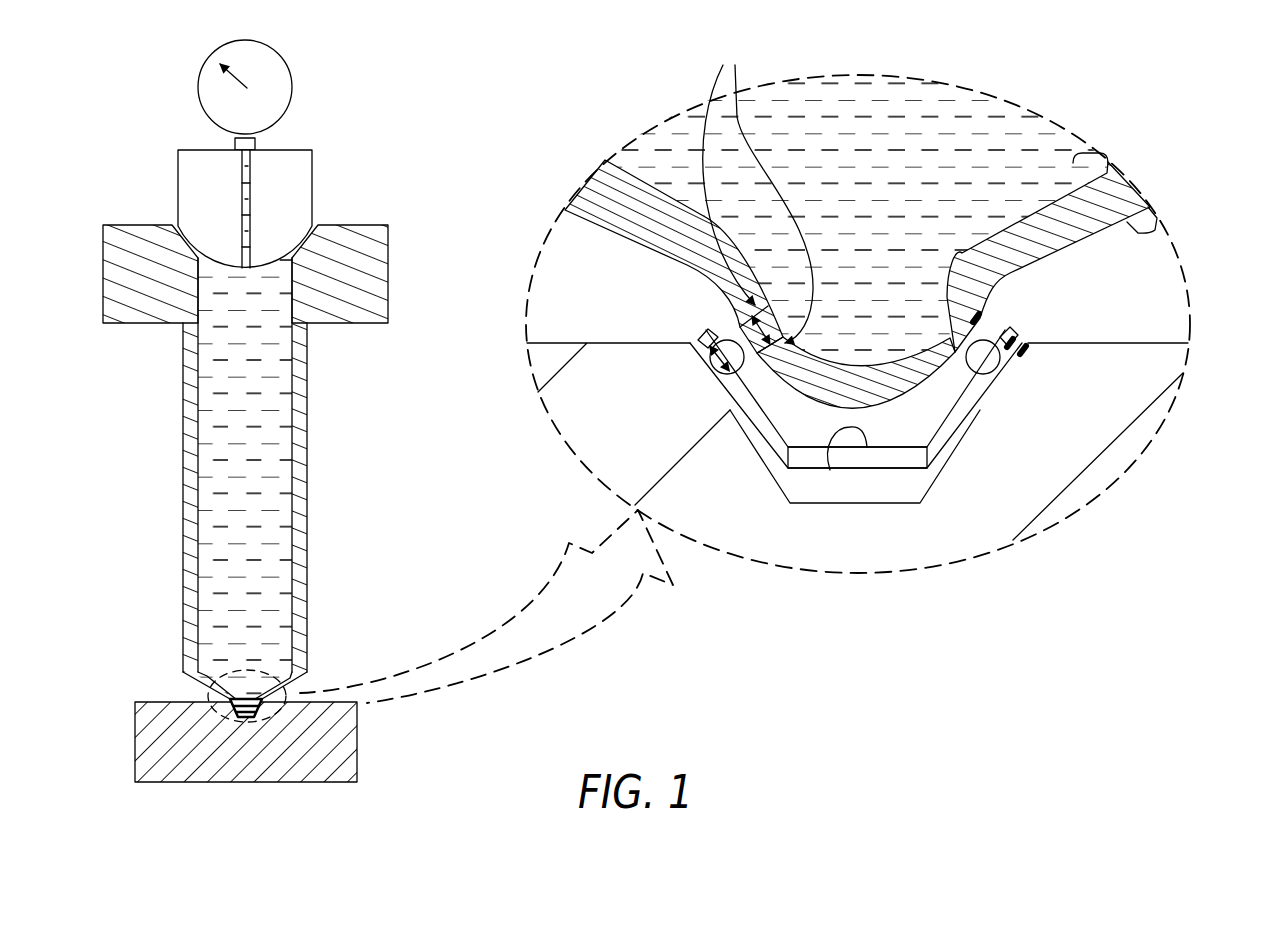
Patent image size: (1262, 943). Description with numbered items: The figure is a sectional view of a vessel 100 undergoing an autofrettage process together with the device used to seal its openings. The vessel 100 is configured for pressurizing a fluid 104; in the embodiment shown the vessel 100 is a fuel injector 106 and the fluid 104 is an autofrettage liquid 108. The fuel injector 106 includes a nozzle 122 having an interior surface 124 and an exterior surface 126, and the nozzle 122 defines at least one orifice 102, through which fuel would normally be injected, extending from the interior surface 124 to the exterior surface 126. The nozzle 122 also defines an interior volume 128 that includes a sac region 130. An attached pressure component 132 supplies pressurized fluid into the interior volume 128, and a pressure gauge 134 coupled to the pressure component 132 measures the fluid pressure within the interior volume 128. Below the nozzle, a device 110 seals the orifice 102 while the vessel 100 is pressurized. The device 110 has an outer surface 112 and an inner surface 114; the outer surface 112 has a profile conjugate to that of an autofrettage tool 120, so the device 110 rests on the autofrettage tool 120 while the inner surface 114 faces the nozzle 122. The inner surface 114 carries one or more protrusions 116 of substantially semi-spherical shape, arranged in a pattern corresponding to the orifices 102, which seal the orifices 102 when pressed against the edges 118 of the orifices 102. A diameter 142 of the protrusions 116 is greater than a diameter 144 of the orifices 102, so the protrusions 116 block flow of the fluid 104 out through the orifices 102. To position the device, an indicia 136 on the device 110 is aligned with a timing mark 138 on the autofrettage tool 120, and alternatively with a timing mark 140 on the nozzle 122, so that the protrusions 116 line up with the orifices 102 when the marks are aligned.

The vessel 100 is at (327, 509).
The orifice 102 is at (953, 332).
The fluid 104 is at (214, 385).
The fuel injector 106 is at (308, 457).
The autofrettage liquid 108 is at (222, 447).
The device 110 is at (893, 471).
The outer surface 112 is at (800, 456).
The inner surface 114 is at (830, 470).
The protrusion 116 is at (1000, 362).
The edge of orifice 118 is at (758, 197).
The autofrettage tool 120 is at (327, 737).
The nozzle 122 is at (720, 283).
The interior surface 124 is at (1097, 152).
The exterior surface 126 is at (1160, 218).
The interior volume 128 is at (253, 640).
The sac region 130 is at (863, 338).
The pressure component 132 is at (326, 181).
The pressure gauge 134 is at (293, 75).
The indicia 136 is at (1012, 342).
The timing mark 138 is at (1026, 352).
The timing mark 140 is at (978, 316).
The diameter of protrusions 142 is at (680, 360).
The diameter of orifices 144 is at (740, 327).